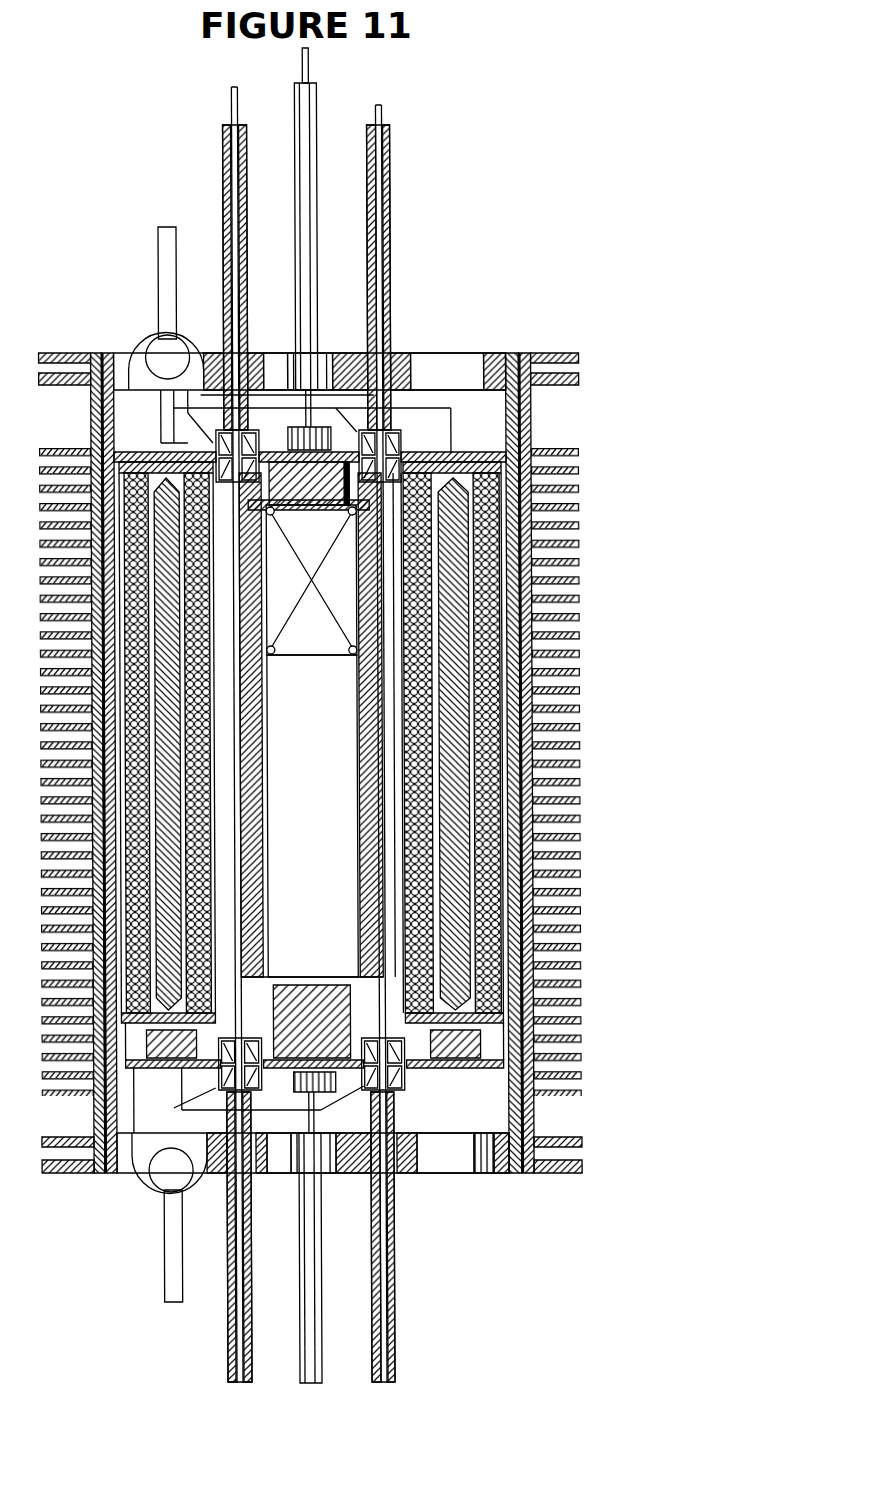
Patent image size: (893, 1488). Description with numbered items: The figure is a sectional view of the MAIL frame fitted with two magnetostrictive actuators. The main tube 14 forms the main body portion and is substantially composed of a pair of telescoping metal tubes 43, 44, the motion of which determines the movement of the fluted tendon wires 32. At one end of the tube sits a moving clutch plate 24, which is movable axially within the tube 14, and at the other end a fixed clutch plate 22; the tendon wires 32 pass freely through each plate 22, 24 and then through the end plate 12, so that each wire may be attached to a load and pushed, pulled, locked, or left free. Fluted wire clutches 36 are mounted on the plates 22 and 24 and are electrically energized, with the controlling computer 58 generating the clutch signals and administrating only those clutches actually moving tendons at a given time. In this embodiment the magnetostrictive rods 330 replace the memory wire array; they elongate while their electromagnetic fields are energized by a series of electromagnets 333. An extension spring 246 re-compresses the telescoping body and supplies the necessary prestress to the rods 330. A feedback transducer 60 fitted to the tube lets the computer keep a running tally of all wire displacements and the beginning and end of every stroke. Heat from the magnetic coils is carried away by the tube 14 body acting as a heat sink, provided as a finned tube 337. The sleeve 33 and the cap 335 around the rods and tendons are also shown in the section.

The end plate 12 is at (419, 363).
The main tube 14 is at (607, 763).
The fixed clutch plate 22 is at (465, 450).
The moving clutch plate 24 is at (117, 967).
The fluted tendon wire 32 is at (385, 277).
The shaft sleeve 33 is at (392, 207).
The fluted wire clutch 36 is at (403, 437).
The telescoping metal tube 43 is at (366, 688).
The telescoping metal tube 44 is at (373, 716).
The controlling computer 58 is at (180, 1222).
The feedback transducer 60 is at (265, 1000).
The extension spring 246 is at (312, 557).
The magnetostrictive rod 330 is at (453, 582).
The electromagnet 333 is at (503, 790).
The column cap 335 is at (477, 464).
The finned tube 337 is at (538, 884).